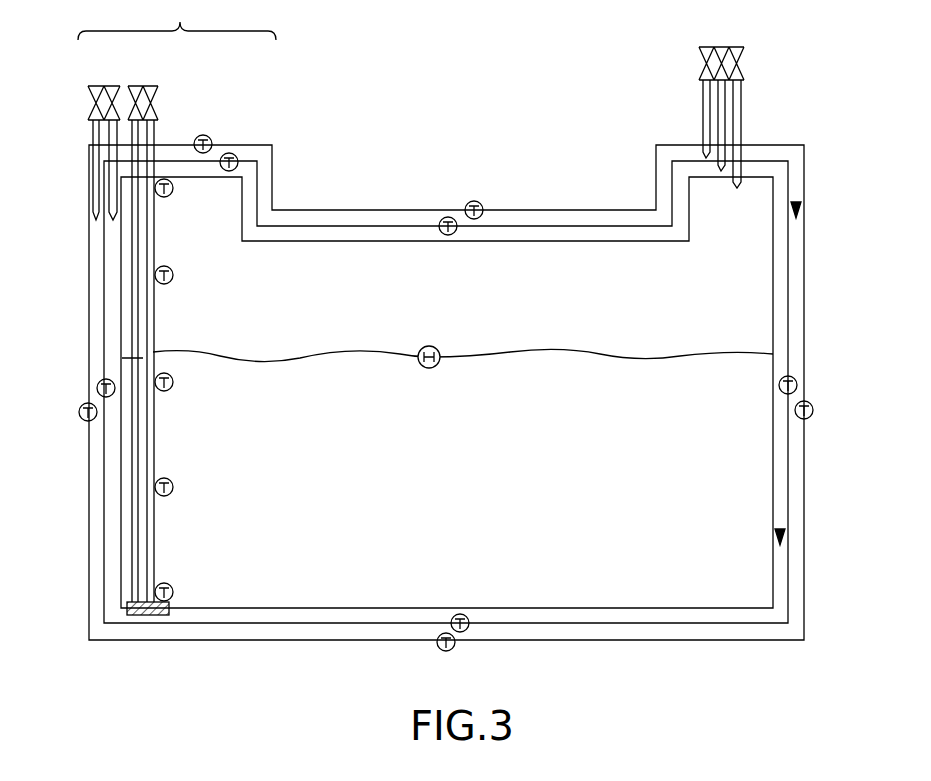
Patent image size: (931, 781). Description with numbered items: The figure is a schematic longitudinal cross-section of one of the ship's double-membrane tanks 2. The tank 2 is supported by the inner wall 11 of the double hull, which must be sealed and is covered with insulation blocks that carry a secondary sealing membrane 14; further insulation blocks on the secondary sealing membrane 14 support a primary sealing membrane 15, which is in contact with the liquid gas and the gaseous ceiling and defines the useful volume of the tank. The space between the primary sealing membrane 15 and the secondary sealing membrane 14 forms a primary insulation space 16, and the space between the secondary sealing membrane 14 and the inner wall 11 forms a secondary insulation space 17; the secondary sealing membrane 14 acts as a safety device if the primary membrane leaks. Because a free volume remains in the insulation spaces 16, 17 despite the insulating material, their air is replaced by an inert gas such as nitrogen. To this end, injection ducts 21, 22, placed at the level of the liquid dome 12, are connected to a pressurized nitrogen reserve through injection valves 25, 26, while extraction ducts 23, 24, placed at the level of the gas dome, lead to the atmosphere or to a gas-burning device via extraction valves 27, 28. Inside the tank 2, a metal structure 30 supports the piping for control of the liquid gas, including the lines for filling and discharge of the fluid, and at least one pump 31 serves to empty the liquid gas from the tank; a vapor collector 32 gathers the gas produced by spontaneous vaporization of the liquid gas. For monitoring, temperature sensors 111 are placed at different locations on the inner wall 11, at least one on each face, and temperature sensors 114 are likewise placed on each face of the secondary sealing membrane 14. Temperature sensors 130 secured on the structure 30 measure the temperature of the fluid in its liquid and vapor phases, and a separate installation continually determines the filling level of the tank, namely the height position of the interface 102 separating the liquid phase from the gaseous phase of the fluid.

The tank 2 is at (556, 172).
The inner wall 11 is at (570, 642).
The liquid dome 12 is at (177, 20).
The secondary sealing membrane 14 is at (648, 622).
The primary sealing membrane 15 is at (700, 607).
The primary insulation space 16 is at (782, 524).
The secondary insulation space 17 is at (798, 200).
The injection duct 21 is at (112, 176).
The injection duct 22 is at (95, 141).
The extraction duct 23 is at (718, 98).
The extraction duct 24 is at (706, 128).
The injection valve 25 is at (111, 86).
The injection valve 26 is at (90, 94).
The extraction valve 27 is at (727, 47).
The extraction valve 28 is at (700, 62).
The metal structure 30 is at (142, 322).
The pump 31 is at (145, 616).
The vapor collector 32 is at (744, 116).
The interface between liquid and gaseous phases of the fluid 102 is at (429, 346).
The temperature sensor 111 is at (203, 134).
The temperature sensor 114 is at (229, 153).
The temperature sensor 130 is at (172, 196).